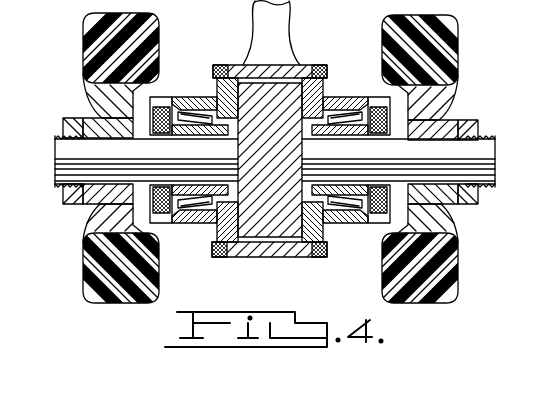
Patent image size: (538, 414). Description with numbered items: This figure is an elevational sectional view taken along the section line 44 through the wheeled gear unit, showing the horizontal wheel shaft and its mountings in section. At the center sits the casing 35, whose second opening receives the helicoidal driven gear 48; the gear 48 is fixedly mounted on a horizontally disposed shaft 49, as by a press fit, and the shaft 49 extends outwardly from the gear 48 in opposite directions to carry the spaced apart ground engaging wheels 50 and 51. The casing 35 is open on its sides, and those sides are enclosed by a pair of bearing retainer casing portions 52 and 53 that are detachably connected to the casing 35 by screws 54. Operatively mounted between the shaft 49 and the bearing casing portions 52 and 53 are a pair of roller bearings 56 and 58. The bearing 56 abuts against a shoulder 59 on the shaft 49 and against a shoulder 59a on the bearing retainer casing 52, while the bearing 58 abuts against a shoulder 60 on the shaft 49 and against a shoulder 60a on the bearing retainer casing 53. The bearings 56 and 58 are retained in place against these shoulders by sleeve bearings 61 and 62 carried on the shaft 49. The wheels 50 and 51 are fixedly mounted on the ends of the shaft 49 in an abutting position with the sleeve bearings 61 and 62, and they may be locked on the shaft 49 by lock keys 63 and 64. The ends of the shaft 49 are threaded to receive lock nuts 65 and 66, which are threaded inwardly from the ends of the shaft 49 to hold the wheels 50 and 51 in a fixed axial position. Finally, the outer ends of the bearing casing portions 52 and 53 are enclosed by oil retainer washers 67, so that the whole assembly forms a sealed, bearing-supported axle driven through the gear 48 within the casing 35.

The casing 35 is at (277, 73).
The axle housing 44 is at (500, 6).
The helicoidal driven gear 48 is at (280, 228).
The shaft 49 is at (480, 154).
The ground engaging wheel 50 is at (106, 298).
The ground engaging wheel 51 is at (449, 226).
The bearing retainer casing portion 52 is at (212, 218).
The bearing retainer casing portion 53 is at (340, 224).
The screws 54 is at (325, 72).
The roller bearing 56 is at (202, 212).
The roller bearing 58 is at (353, 212).
The shoulder 59 is at (224, 134).
The shoulder 59a is at (194, 108).
The shoulder 60 is at (321, 134).
The shoulder 60a is at (331, 116).
The sleeve bearing 61 is at (157, 135).
The sleeve bearing 62 is at (373, 134).
The lock key 63 is at (108, 136).
The lock key 64 is at (427, 136).
The lock nut 65 is at (80, 198).
The lock nut 66 is at (474, 136).
The oil retainer washer 67 is at (170, 97).